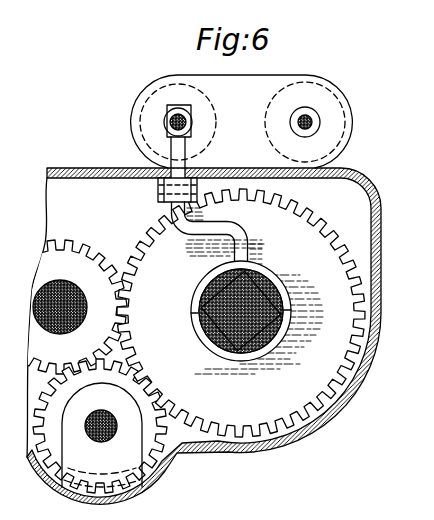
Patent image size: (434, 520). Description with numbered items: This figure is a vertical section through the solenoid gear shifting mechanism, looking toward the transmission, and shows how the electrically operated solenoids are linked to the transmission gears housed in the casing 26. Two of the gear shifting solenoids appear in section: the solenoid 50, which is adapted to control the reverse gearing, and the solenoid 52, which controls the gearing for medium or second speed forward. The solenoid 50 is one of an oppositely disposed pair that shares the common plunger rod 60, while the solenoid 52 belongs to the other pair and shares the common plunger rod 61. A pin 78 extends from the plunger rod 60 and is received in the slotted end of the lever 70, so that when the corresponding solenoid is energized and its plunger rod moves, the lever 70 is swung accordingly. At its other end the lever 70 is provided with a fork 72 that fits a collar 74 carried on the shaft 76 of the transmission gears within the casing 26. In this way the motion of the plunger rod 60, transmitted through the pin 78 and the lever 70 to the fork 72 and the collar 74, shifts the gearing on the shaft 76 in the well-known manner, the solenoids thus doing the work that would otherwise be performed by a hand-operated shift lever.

The casing 26 is at (296, 431).
The solenoid 50 is at (148, 133).
The solenoid 52 is at (334, 140).
The common plunger rod 60 is at (168, 119).
The common plunger rod 61 is at (311, 119).
The lever 70 is at (187, 148).
The fork 72 is at (273, 282).
The collar 74 is at (219, 327).
The shaft 76 is at (239, 328).
The pin 78 is at (193, 116).